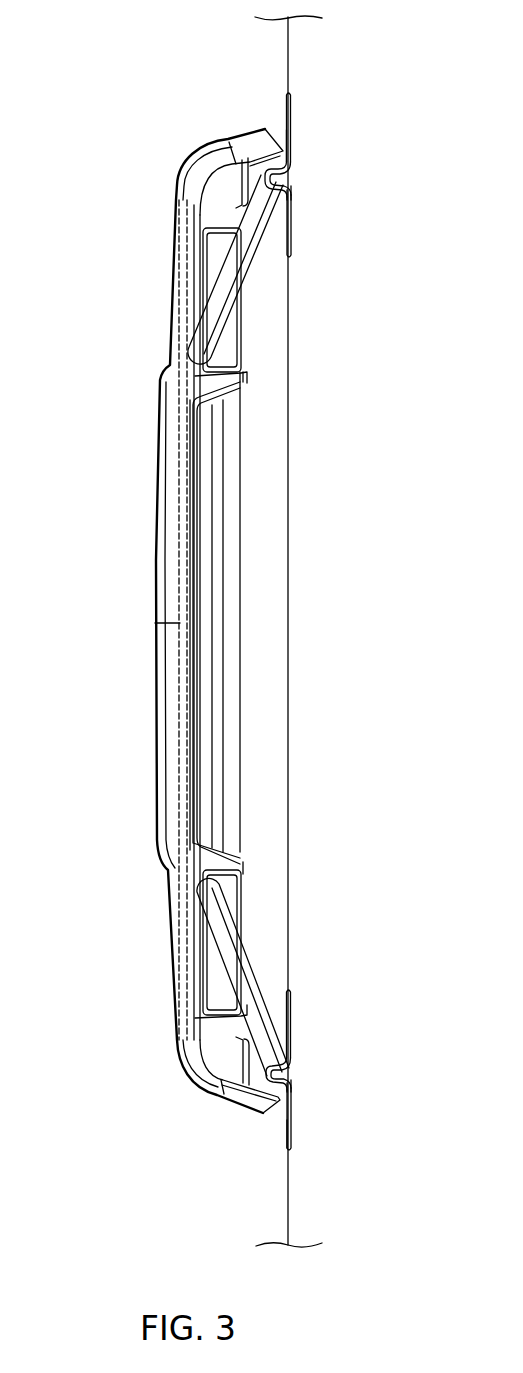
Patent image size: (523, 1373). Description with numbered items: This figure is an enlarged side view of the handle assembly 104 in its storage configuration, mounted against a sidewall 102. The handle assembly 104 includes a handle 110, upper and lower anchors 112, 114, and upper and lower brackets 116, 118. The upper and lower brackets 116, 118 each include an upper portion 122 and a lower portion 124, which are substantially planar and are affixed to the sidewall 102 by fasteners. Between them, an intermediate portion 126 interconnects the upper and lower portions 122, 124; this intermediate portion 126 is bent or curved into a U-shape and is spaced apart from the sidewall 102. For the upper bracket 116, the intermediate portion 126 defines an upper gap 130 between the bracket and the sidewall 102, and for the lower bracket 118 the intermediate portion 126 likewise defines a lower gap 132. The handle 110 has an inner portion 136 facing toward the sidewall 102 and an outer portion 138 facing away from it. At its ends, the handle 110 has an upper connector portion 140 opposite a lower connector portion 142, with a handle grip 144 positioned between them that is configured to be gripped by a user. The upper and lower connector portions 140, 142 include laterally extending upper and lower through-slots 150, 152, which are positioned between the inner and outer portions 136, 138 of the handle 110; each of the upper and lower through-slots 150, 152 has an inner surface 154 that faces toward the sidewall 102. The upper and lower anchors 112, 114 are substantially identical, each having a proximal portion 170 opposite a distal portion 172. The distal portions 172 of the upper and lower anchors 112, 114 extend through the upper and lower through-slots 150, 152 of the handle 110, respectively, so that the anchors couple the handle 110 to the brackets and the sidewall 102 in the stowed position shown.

The sidewall 102 is at (288, 52).
The handle assembly 104 is at (89, 102).
The handle 110 is at (240, 512).
The upper anchor 112 is at (250, 265).
The lower anchor 114 is at (252, 992).
The upper bracket 116 is at (287, 113).
The lower bracket 118 is at (288, 1130).
The upper portion 122 is at (292, 137).
The lower portion 124 is at (292, 218).
The intermediate portion 126 is at (250, 136).
The upper gap 130 is at (293, 170).
The lower gap 132 is at (293, 1064).
The inner portion 136 is at (243, 762).
The outer portion 138 is at (157, 808).
The upper connector portion 140 is at (173, 258).
The lower connector portion 142 is at (172, 958).
The handle grip 144 is at (235, 634).
The upper through-slot 150 is at (207, 268).
The lower through-slot 152 is at (207, 990).
The inner surface 154 is at (205, 292).
The proximal portion 170 is at (293, 176).
The distal portion 172 is at (168, 373).